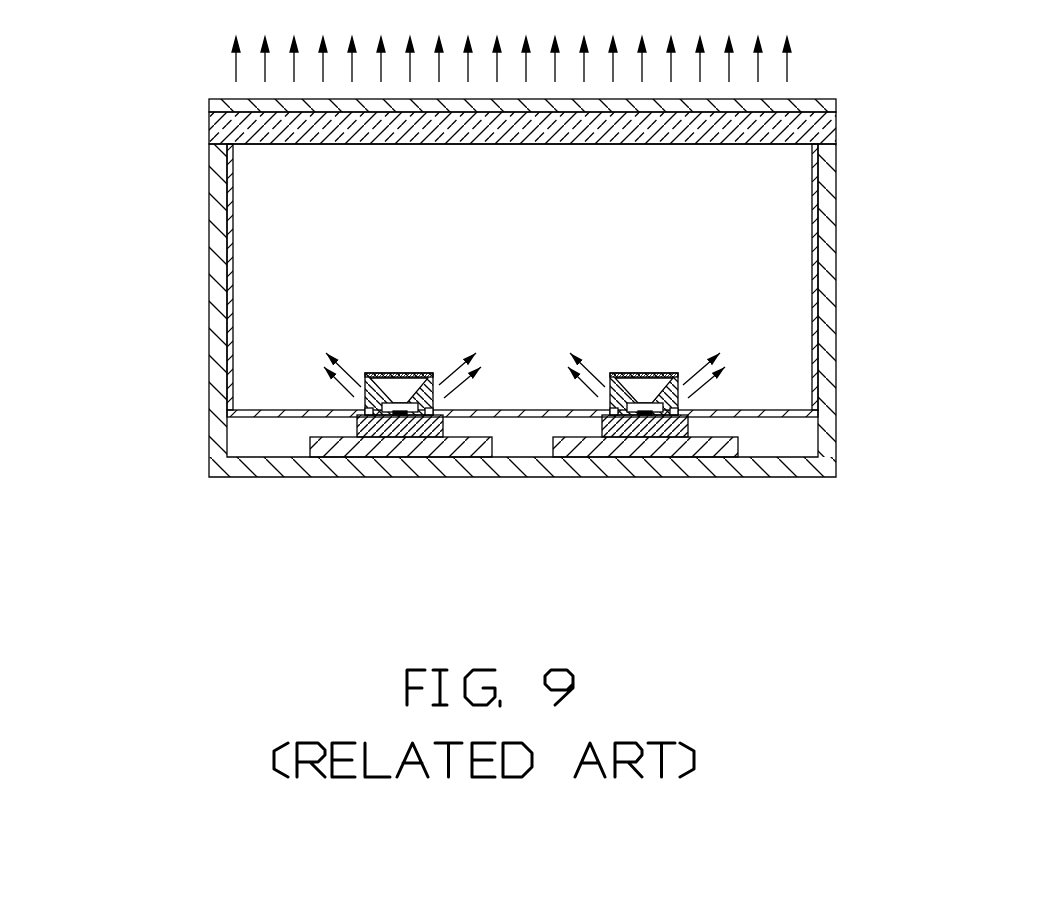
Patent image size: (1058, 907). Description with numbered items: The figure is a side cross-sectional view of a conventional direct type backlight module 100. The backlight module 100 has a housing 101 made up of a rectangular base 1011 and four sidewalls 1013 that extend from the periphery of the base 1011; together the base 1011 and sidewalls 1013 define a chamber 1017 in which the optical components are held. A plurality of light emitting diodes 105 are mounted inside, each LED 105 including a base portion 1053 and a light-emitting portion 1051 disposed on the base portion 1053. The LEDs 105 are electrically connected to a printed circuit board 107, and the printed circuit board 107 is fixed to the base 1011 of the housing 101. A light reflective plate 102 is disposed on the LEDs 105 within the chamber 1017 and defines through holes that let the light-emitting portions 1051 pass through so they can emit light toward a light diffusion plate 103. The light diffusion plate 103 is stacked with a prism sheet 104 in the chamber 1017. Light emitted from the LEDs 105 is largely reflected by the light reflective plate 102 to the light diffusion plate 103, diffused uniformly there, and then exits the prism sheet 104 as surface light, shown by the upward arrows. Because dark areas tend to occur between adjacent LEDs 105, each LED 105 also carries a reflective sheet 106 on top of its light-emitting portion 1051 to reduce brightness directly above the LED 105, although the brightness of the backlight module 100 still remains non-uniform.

The backlight module 100 is at (188, 67).
The housing 101 is at (496, 329).
The base 1011 is at (260, 467).
The sidewalls 1013 is at (217, 353).
The chamber 1017 is at (797, 200).
The light reflective plate 102 is at (743, 410).
The light diffusion plate 103 is at (826, 130).
The prism sheet 104 is at (806, 107).
The light emitting diode 105 is at (382, 453).
The light-emitting portion 1051 is at (366, 409).
The base portion 1053 is at (391, 410).
The reflective sheet 106 is at (389, 372).
The printed circuit board 107 is at (642, 447).